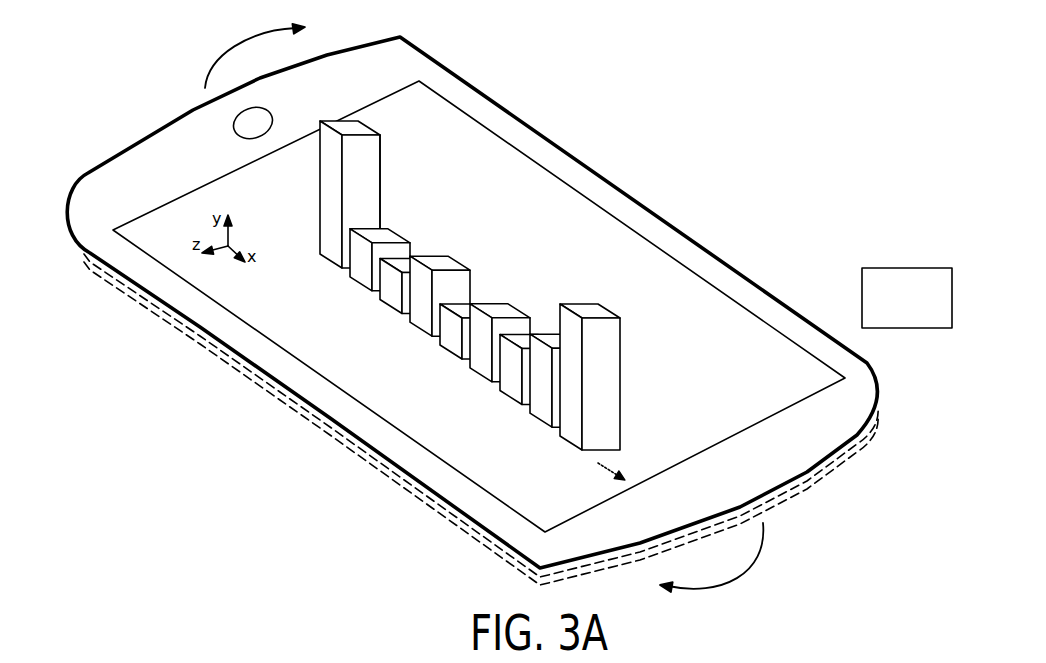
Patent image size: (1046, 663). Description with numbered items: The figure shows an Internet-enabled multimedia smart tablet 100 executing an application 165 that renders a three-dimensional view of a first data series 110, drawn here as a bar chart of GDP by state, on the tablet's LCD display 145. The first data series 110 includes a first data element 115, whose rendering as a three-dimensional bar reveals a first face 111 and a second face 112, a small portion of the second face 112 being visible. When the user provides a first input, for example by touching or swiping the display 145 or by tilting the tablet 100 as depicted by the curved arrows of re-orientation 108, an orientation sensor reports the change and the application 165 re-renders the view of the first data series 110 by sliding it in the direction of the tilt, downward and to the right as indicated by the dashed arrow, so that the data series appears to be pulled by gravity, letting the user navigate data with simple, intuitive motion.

The tablet 100 is at (927, 522).
The re-orientation 108 is at (887, 617).
The first data series 110 is at (443, 300).
The first face 111 is at (352, 194).
The second face 112 is at (367, 193).
The first data element 115 is at (381, 150).
The display 145 is at (844, 333).
The application 165 is at (873, 367).